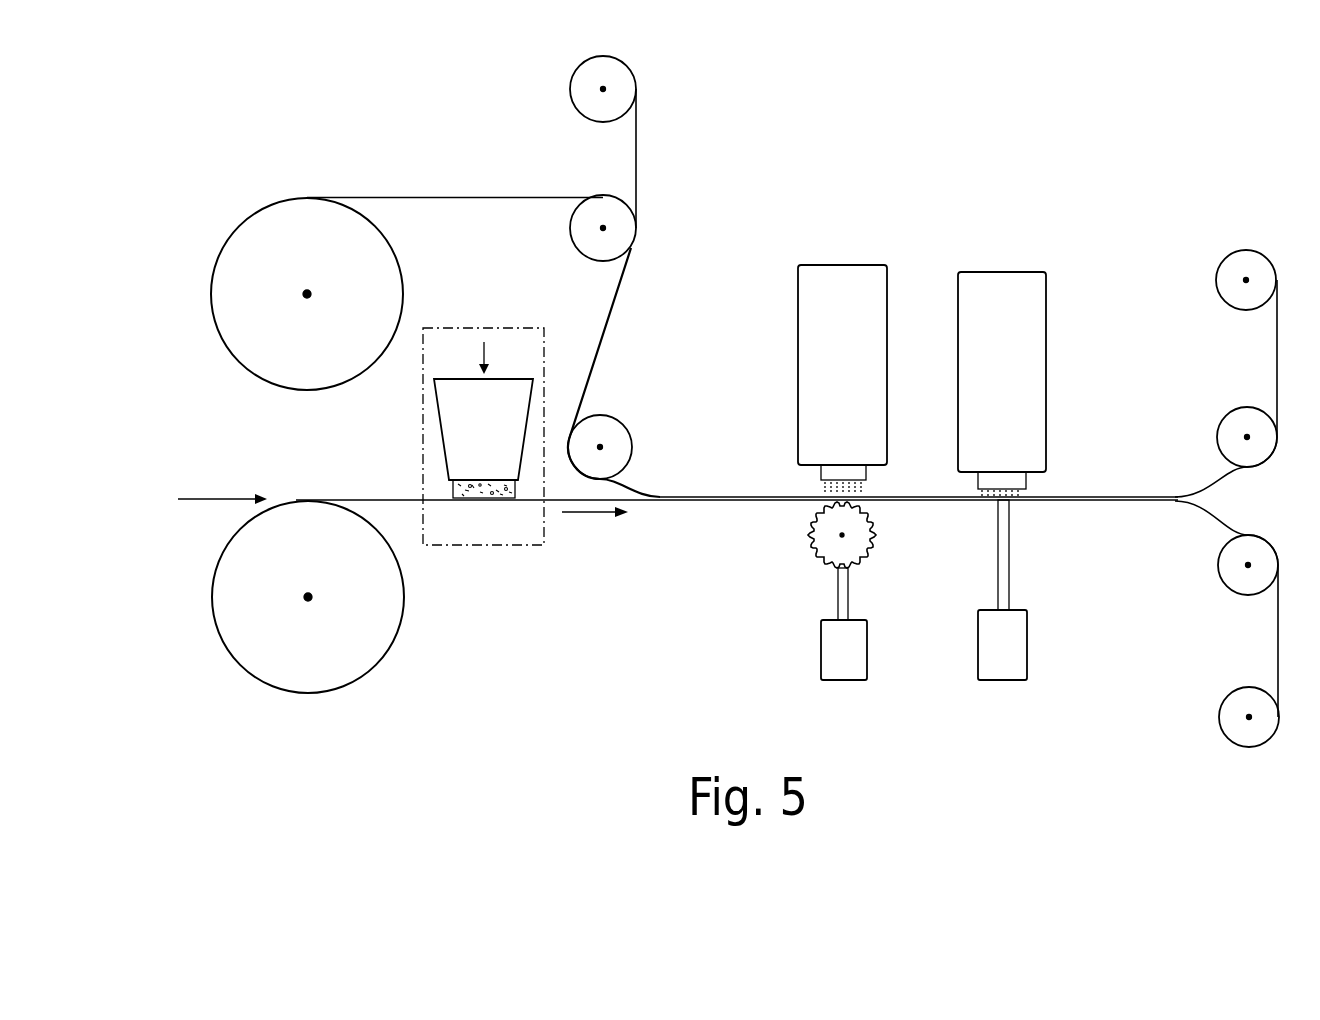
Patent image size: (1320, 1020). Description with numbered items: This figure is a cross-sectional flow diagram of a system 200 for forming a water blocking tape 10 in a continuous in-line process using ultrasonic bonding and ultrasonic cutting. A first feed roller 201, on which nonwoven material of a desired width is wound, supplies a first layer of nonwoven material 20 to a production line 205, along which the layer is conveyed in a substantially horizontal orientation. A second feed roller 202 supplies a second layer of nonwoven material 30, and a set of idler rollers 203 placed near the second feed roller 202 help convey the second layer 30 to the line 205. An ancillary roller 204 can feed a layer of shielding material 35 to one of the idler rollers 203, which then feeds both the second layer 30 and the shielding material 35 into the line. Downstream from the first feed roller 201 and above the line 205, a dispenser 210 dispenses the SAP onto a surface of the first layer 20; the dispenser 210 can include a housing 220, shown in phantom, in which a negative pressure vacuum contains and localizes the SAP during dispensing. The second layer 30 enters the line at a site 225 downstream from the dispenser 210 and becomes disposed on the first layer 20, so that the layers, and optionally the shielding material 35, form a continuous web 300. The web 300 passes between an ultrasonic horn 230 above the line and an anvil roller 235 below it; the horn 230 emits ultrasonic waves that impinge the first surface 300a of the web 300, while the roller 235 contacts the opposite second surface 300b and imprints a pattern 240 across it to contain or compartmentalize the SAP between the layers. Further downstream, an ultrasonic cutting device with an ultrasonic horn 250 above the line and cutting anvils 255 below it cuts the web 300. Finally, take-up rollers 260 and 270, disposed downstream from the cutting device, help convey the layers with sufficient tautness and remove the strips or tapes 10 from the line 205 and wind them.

The system 200 is at (235, 108).
The second feed roller 202 is at (212, 295).
The first feed roller 201 is at (212, 598).
The second layer of nonwoven material 30 is at (452, 197).
The ancillary roller 204 is at (570, 89).
The layer of shielding material 35 is at (637, 156).
The idler rollers 203 is at (570, 228).
The production line 205 is at (207, 497).
The first layer of nonwoven material 20 is at (385, 497).
The housing 220 is at (455, 328).
The dispenser 210 is at (466, 436).
The continuous web 300 is at (702, 482).
The site 225 is at (665, 482).
The first surface of the web 300a is at (795, 480).
The second surface of the web 300b is at (796, 516).
The ultrasonic horn 230 is at (862, 391).
The ultrasonic horn 250 is at (1021, 396).
The pattern 240 is at (876, 540).
The anvil roller 235 is at (858, 545).
The cutting anvils 255 is at (1010, 565).
The water blocking tape 10 is at (1210, 490).
The take-up rollers 260 is at (1216, 280).
The take-up rollers 270 is at (1218, 580).